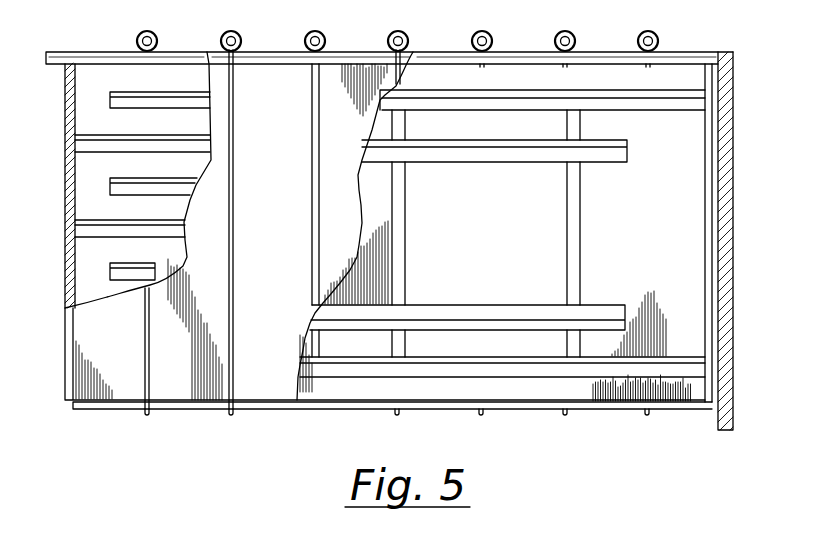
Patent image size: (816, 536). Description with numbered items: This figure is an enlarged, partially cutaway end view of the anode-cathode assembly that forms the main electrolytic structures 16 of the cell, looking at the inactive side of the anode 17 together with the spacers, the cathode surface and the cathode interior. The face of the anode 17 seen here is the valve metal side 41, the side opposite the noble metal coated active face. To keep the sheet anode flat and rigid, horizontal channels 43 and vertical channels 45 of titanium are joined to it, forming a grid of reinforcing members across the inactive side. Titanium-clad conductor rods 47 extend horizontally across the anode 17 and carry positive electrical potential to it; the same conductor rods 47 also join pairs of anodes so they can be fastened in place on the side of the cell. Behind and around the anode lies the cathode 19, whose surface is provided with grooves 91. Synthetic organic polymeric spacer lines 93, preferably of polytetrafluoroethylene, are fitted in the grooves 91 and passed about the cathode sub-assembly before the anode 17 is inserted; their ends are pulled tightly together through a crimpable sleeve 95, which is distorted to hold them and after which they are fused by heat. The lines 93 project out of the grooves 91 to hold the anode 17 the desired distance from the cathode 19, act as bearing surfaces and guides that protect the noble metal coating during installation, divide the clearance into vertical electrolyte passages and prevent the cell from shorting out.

The main electrolytic structures 16 is at (718, 252).
The anode 17 is at (693, 167).
The cathode 19 is at (87, 332).
The valve metal side of the anode 41 is at (525, 392).
The horizontal channels 43 is at (677, 112).
The vertical channels 45 is at (581, 225).
The conductor rods 47 is at (503, 162).
The grooves 91 is at (311, 203).
The spacer lines 93 is at (233, 145).
The crimpable sleeve 95 is at (402, 33).